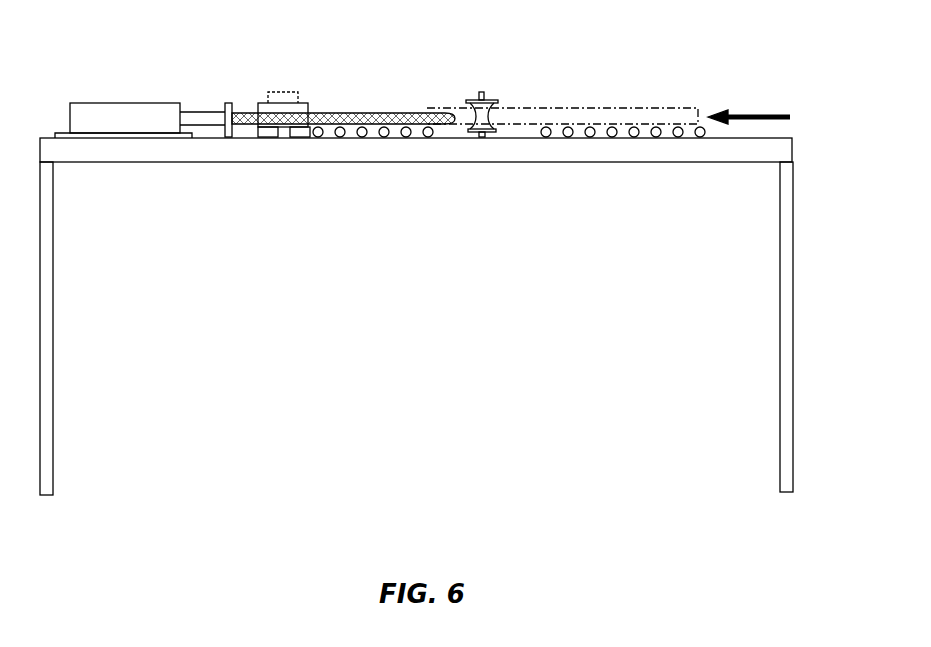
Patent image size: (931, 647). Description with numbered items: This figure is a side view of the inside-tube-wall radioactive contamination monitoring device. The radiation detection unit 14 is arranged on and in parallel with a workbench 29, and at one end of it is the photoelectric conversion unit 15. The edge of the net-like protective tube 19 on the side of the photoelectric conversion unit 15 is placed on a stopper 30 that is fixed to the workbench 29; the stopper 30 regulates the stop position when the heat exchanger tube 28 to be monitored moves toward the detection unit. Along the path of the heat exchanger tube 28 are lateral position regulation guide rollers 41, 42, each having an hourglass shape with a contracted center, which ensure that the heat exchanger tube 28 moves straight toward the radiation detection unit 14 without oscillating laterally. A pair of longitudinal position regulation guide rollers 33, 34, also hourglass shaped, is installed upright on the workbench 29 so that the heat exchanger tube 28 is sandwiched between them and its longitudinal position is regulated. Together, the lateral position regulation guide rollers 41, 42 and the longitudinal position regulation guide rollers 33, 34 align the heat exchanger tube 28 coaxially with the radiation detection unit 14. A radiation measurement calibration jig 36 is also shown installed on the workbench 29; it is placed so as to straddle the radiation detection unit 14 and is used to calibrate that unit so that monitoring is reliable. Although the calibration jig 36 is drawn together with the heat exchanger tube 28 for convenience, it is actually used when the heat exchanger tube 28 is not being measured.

The radiation detection unit 14 is at (416, 249).
The photoelectric conversion unit 15 is at (197, 110).
The net-like protective tube 19 is at (372, 111).
The heat exchanger tube 28 is at (603, 108).
The workbench 29 is at (779, 230).
The stopper 30 is at (232, 128).
The longitudinal position regulation guide roller 33 is at (518, 85).
The longitudinal position regulation guide roller 34 is at (488, 101).
The radiation measurement calibration jig 36 is at (292, 118).
The lateral position regulation guide roller 41 is at (592, 137).
The lateral position regulation guide roller 42 is at (545, 137).